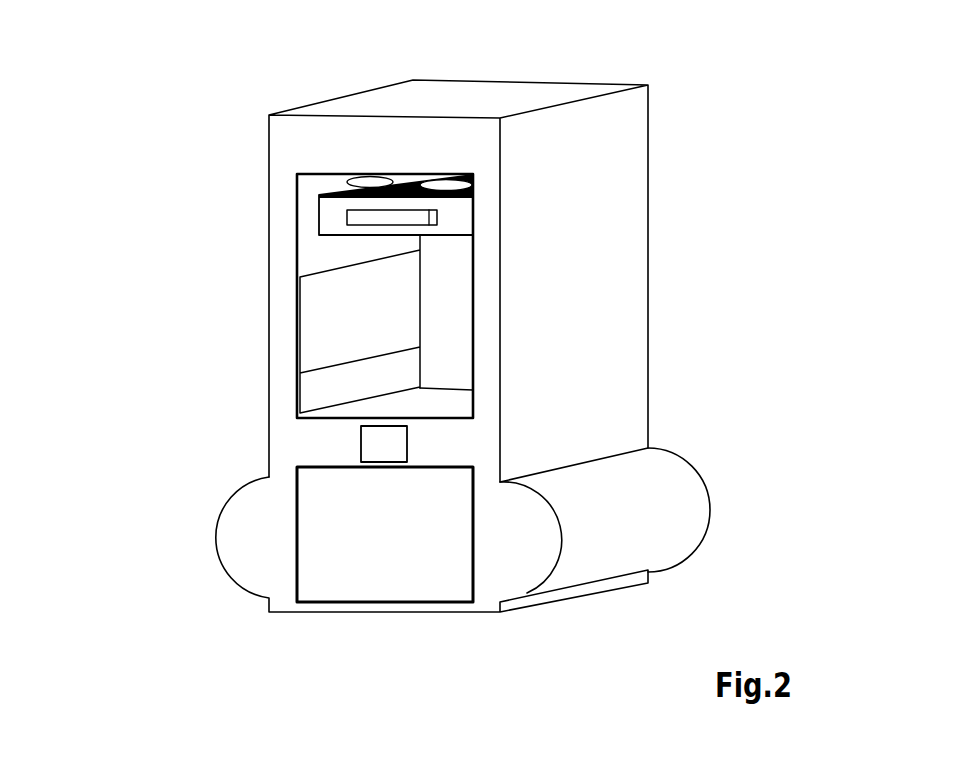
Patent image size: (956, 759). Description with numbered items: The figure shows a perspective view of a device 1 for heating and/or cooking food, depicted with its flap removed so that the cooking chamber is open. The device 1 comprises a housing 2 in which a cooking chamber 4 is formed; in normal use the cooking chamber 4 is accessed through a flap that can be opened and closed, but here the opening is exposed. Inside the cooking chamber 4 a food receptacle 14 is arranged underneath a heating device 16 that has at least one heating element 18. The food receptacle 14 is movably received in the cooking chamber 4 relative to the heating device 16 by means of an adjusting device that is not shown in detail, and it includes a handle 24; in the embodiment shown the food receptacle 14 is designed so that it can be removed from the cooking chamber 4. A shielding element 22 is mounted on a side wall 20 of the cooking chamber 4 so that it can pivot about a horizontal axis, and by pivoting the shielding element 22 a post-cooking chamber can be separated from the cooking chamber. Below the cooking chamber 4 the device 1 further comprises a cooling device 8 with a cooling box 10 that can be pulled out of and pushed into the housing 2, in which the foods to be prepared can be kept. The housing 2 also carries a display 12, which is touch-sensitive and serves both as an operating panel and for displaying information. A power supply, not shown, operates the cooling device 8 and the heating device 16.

The device 1 is at (194, 350).
The housing 2 is at (622, 200).
The cooking chamber 4 is at (324, 252).
The cooling device 8 is at (484, 571).
The cooling box 10 is at (393, 577).
The display 12 is at (361, 443).
The food receptacle 14 is at (330, 215).
The heating device 16 is at (334, 181).
The heating element 18 is at (440, 183).
The side wall 20 is at (312, 387).
The shielding element 22 is at (317, 312).
The handle 24 is at (378, 220).